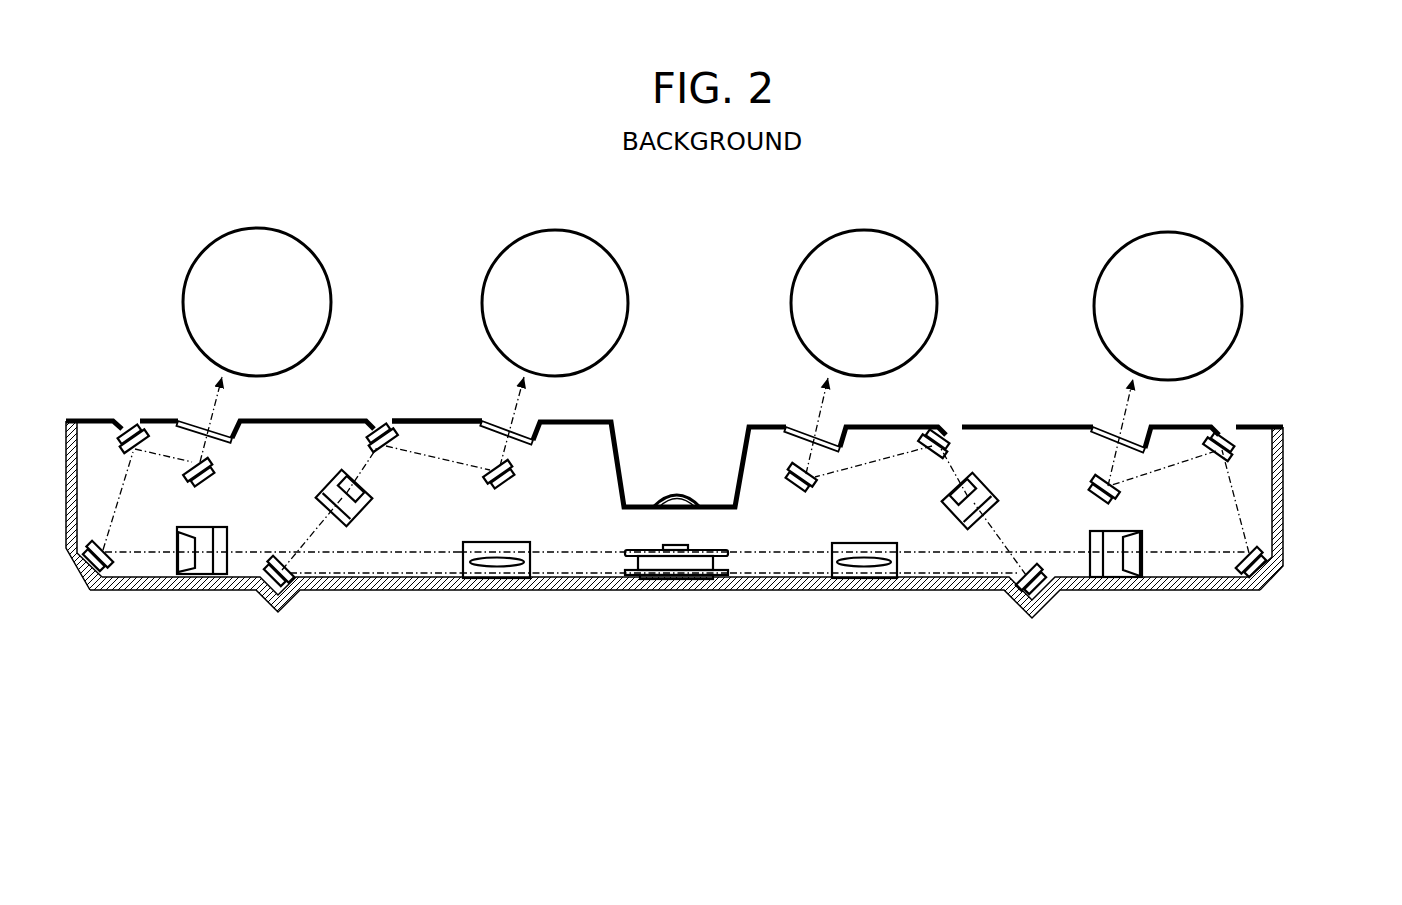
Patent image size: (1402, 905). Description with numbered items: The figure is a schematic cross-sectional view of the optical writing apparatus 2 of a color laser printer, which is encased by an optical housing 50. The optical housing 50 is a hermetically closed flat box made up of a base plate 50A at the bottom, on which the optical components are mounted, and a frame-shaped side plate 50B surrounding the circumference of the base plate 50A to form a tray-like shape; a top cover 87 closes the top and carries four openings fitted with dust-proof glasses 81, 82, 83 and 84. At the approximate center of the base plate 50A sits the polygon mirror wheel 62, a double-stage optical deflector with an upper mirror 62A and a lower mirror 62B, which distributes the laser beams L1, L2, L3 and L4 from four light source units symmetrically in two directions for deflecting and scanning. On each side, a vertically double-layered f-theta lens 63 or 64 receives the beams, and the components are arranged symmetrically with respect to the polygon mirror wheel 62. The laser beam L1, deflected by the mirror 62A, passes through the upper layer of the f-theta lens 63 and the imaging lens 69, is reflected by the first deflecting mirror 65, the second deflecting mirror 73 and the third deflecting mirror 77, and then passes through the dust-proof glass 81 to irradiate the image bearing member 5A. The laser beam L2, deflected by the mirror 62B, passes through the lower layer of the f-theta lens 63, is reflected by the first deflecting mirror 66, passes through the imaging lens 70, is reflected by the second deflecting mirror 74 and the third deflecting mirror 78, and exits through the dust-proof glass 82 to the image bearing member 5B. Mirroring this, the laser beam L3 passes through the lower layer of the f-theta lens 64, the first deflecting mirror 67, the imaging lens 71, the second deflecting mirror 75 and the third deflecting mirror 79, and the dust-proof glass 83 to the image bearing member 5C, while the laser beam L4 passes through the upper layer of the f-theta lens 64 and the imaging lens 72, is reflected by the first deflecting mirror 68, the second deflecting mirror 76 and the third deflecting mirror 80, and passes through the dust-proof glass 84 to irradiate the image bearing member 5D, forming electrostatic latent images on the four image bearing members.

The optical writing apparatus 2 is at (1280, 330).
The image bearing member 5A is at (314, 250).
The image bearing member 5B is at (612, 252).
The image bearing member 5C is at (920, 252).
The image bearing member 5D is at (1224, 255).
The optical housing 50 is at (712, 520).
The base plate 50A is at (778, 591).
The side plate 50B is at (1284, 500).
The polygon mirror wheel 62 is at (692, 578).
The mirror 62A is at (724, 550).
The mirror 62B is at (646, 580).
The f-theta lens 63 is at (512, 548).
The f-theta lens 64 is at (878, 548).
The first deflecting mirror 65 is at (97, 545).
The first deflecting mirror 66 is at (270, 600).
The first deflecting mirror 67 is at (1020, 608).
The first deflecting mirror 68 is at (1276, 586).
The imaging lens 69 is at (205, 534).
The imaging lens 70 is at (328, 482).
The imaging lens 71 is at (988, 490).
The imaging lens 72 is at (1108, 536).
The second deflecting mirror 73 is at (120, 426).
The second deflecting mirror 74 is at (398, 432).
The second deflecting mirror 75 is at (952, 432).
The second deflecting mirror 76 is at (1234, 432).
The third deflecting mirror 77 is at (186, 479).
The third deflecting mirror 78 is at (484, 476).
The third deflecting mirror 79 is at (818, 478).
The third deflecting mirror 80 is at (1120, 492).
The dust-proof glass 81 is at (192, 420).
The dust-proof glass 82 is at (492, 421).
The dust-proof glass 83 is at (802, 426).
The dust-proof glass 84 is at (1108, 426).
The top cover 87 is at (393, 420).
The laser beam L1 is at (214, 412).
The laser beam L2 is at (514, 418).
The laser beam L3 is at (824, 420).
The laser beam L4 is at (1126, 422).